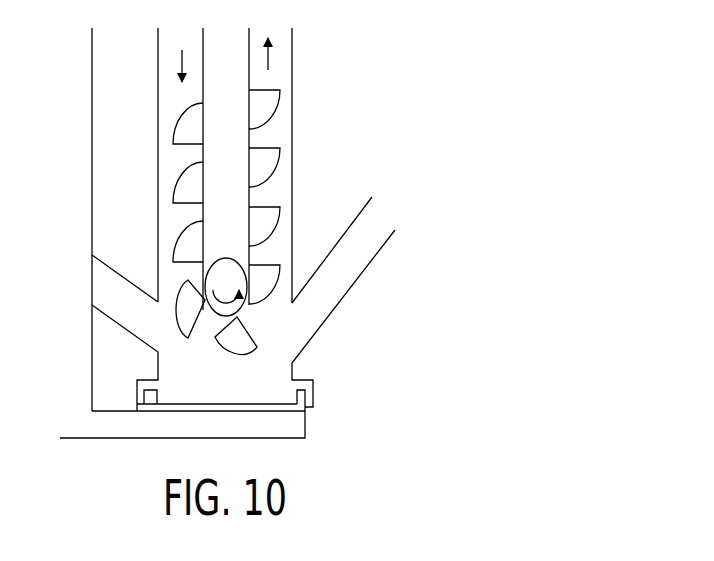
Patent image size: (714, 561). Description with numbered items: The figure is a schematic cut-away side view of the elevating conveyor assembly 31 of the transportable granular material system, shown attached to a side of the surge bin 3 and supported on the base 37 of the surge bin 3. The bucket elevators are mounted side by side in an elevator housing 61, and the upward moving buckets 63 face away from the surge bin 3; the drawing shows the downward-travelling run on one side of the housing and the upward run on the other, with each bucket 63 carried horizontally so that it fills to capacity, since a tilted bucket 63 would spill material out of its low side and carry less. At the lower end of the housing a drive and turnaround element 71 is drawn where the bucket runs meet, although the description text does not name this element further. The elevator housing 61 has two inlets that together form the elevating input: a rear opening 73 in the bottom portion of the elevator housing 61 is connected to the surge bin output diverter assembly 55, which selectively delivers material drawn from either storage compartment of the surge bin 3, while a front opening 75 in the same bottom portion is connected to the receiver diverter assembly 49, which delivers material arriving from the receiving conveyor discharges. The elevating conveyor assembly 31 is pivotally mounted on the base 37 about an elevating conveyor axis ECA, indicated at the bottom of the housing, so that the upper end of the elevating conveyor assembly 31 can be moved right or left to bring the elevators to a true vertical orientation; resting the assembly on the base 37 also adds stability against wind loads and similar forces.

The surge bin 3 is at (94, 150).
The elevating conveyor assembly 31 is at (306, 147).
The base 37 is at (110, 411).
The receiver diverter assembly 49 is at (365, 268).
The surge bin output diverter assembly 55 is at (128, 278).
The elevator housing 61 is at (293, 45).
The buckets 63 is at (278, 103).
The impeller 71 is at (216, 306).
The rear opening 73 is at (155, 328).
The front opening 75 is at (295, 332).
The elevating conveyor axis ECA is at (320, 397).